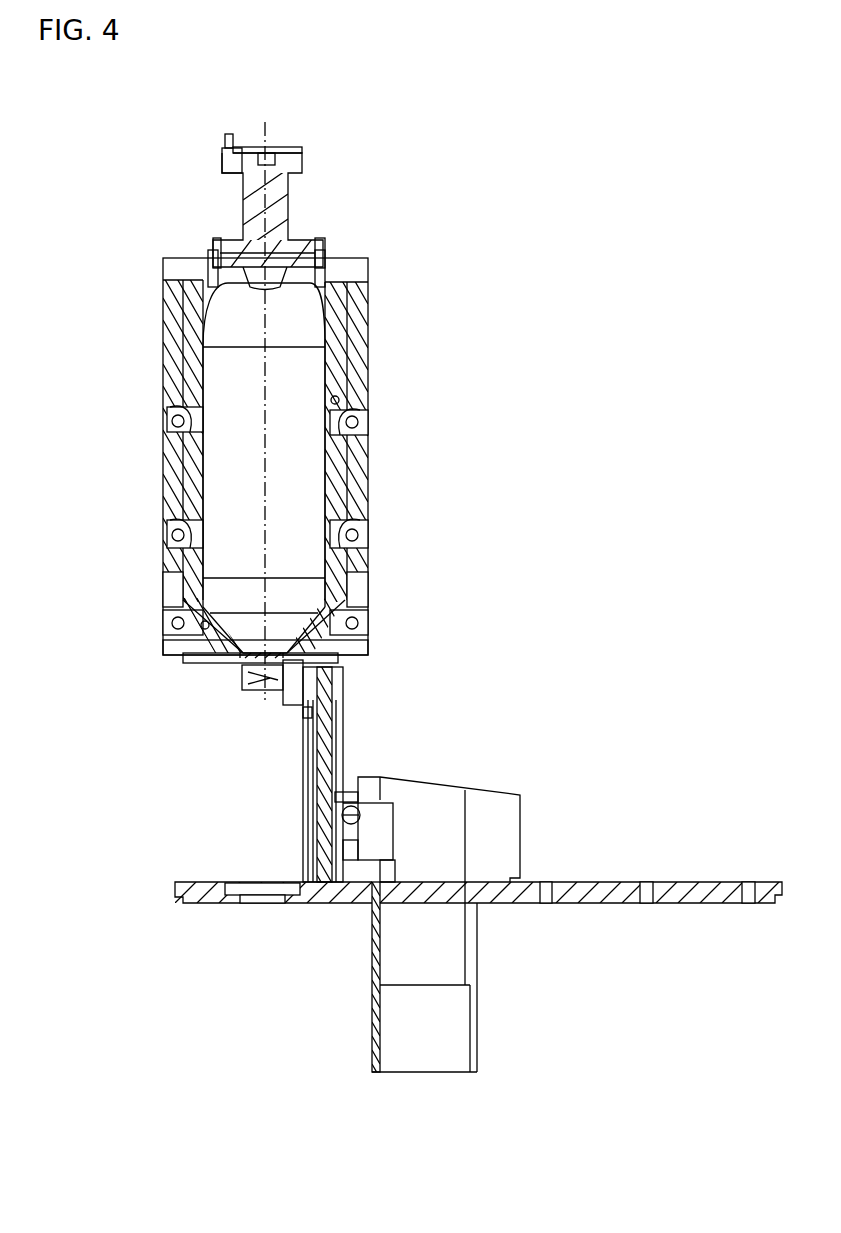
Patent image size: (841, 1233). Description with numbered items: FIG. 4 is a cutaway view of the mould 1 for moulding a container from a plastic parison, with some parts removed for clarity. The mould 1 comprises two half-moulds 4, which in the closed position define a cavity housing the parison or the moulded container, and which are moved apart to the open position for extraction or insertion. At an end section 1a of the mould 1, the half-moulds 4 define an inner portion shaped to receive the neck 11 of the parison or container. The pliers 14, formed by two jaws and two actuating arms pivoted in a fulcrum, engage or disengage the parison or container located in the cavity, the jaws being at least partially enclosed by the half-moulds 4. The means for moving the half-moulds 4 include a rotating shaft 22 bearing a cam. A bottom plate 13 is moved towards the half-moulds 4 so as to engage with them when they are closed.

The mould 1 is at (602, 345).
The end section 1a is at (140, 658).
The half-moulds 4 is at (185, 335).
The neck 11 is at (234, 672).
The bottom plate 13 is at (325, 226).
The pliers 14 is at (368, 729).
The rotating shaft 22 is at (297, 472).